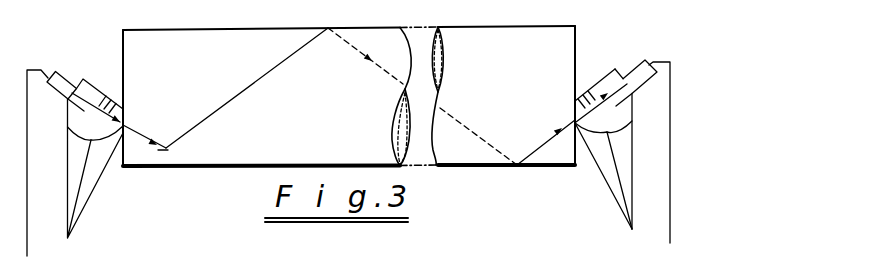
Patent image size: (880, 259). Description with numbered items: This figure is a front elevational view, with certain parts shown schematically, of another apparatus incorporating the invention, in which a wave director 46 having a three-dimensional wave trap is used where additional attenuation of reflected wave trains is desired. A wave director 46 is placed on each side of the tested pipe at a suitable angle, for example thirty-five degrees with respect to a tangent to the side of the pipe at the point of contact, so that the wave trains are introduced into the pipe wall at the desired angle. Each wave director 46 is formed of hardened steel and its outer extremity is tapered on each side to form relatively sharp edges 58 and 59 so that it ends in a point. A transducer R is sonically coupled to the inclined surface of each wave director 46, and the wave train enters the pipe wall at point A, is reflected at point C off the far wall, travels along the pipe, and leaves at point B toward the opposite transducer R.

The wave director 46 is at (604, 178).
The sharp edge 58 is at (632, 188).
The sharp edge 59 is at (618, 203).
The transducer / radiator R is at (67, 73).
The entry point of beam on pipe wall A is at (125, 112).
The exit point of beam on pipe wall B is at (575, 108).
The reflection point on pipe bottom C is at (168, 152).